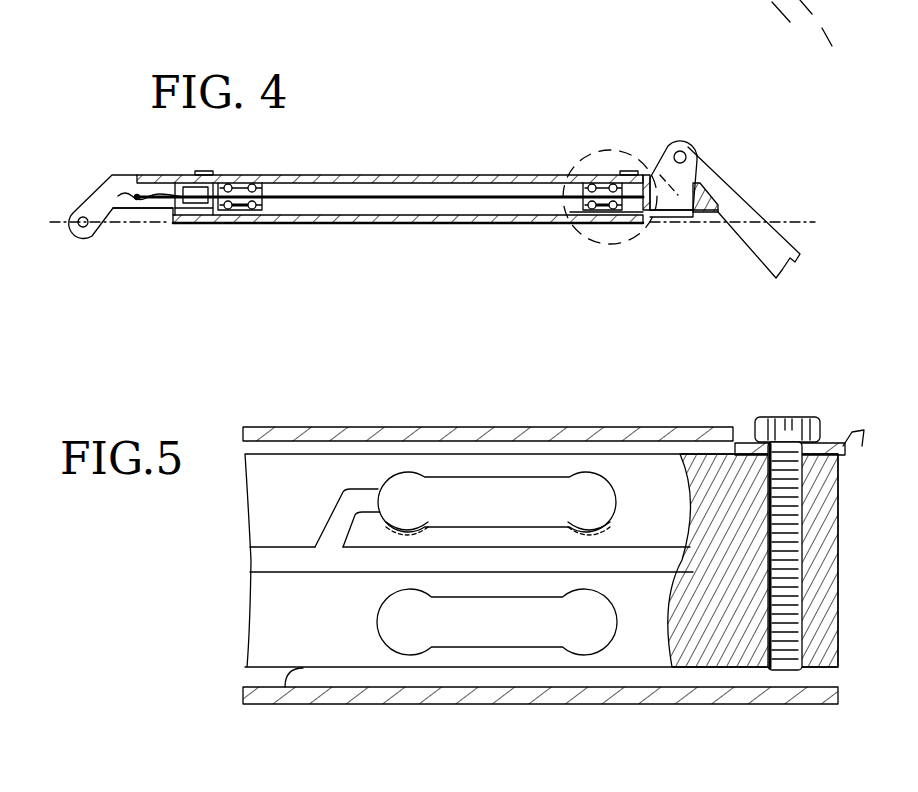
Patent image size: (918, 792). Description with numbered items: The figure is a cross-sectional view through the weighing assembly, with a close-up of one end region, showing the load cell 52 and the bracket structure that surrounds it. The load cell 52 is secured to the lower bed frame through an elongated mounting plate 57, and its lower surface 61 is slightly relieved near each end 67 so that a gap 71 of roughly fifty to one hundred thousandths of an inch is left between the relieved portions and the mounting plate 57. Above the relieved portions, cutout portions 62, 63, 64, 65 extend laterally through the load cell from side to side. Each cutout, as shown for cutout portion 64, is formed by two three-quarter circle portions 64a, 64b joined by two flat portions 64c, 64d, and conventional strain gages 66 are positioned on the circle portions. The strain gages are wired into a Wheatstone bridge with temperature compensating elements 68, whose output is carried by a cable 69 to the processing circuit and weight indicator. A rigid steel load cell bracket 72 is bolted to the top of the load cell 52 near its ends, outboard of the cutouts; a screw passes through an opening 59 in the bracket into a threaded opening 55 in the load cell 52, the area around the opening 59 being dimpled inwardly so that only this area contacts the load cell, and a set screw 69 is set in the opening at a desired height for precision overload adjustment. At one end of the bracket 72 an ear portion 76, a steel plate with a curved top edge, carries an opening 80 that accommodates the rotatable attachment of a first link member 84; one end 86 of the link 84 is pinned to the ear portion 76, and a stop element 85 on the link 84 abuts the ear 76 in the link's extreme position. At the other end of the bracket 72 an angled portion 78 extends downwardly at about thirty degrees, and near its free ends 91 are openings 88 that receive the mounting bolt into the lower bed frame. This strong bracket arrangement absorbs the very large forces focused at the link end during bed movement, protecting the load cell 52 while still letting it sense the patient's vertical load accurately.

In FIG. 5, the load cell 52 is at (232, 533).
In FIG. 5, the threaded opening 55 is at (800, 565).
In FIG. 4, the mounting plate 57 is at (330, 223).
In FIG. 5, the mounting plate 57 is at (702, 693).
In FIG. 5, the opening 59 is at (760, 417).
In FIG. 4, the lower surface 61 is at (357, 215).
In FIG. 5, the lower surface 61 is at (333, 670).
In FIG. 4, the cutout portion 62 is at (253, 183).
In FIG. 4, the cutout portion 63 is at (253, 210).
In FIG. 4, the cutout portion 64 is at (587, 183).
In FIG. 5, the cutout portion 64 is at (400, 470).
In FIG. 5, the circle portion 64a is at (378, 483).
In FIG. 5, the circle portion 64b is at (611, 487).
In FIG. 5, the flat portion 64c is at (523, 478).
In FIG. 5, the flat portion 64d is at (455, 526).
In FIG. 4, the cutout portion 65 is at (623, 223).
In FIG. 5, the cutout portion 65 is at (593, 653).
In FIG. 5, the strain gage 66 is at (388, 522).
In FIG. 4, the end of load cell 67 is at (650, 176).
In FIG. 4, the temperature compensating elements 68 is at (200, 203).
In FIG. 4, the cable 69 is at (158, 200).
In FIG. 5, the cable 69 is at (802, 638).
In FIG. 5, the gap 71 is at (430, 680).
In FIG. 4, the load cell bracket 72 is at (462, 176).
In FIG. 5, the load cell bracket 72 is at (622, 427).
In FIG. 4, the ear portion 76 is at (685, 212).
In FIG. 4, the angled portion 78 is at (105, 208).
In FIG. 4, the opening 80 is at (690, 152).
In FIG. 4, the first link member 84 is at (744, 195).
In FIG. 4, the stop element 85 is at (703, 212).
In FIG. 4, the end of link 86 is at (672, 142).
In FIG. 4, the openings 88 is at (83, 236).
In FIG. 4, the free ends 91 is at (73, 230).